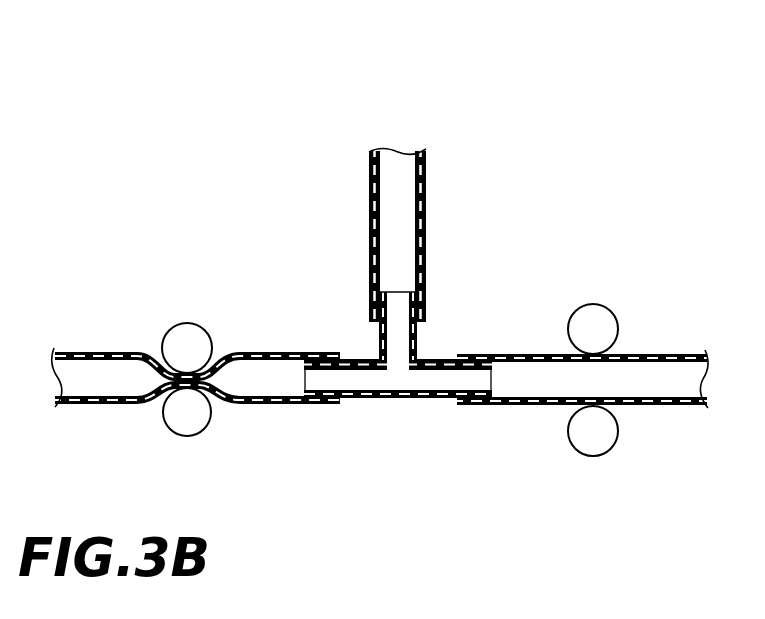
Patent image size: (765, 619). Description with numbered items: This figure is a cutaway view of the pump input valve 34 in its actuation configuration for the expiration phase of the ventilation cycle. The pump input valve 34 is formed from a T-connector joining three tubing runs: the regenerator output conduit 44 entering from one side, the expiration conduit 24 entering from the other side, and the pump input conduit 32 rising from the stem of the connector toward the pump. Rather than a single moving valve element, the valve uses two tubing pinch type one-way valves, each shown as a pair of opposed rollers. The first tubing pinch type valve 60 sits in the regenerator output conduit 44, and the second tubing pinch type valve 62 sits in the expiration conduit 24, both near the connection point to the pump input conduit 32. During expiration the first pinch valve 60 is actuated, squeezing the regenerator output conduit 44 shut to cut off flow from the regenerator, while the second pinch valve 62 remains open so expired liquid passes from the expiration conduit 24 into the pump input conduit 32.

The expiration conduit 24 is at (657, 407).
The pump input conduit 32 is at (427, 268).
The pump input valve 34 is at (489, 120).
The output conduit 44 is at (110, 400).
The first tubing pinch type valve 60 is at (177, 325).
The second tubing pinch type valve 62 is at (598, 306).